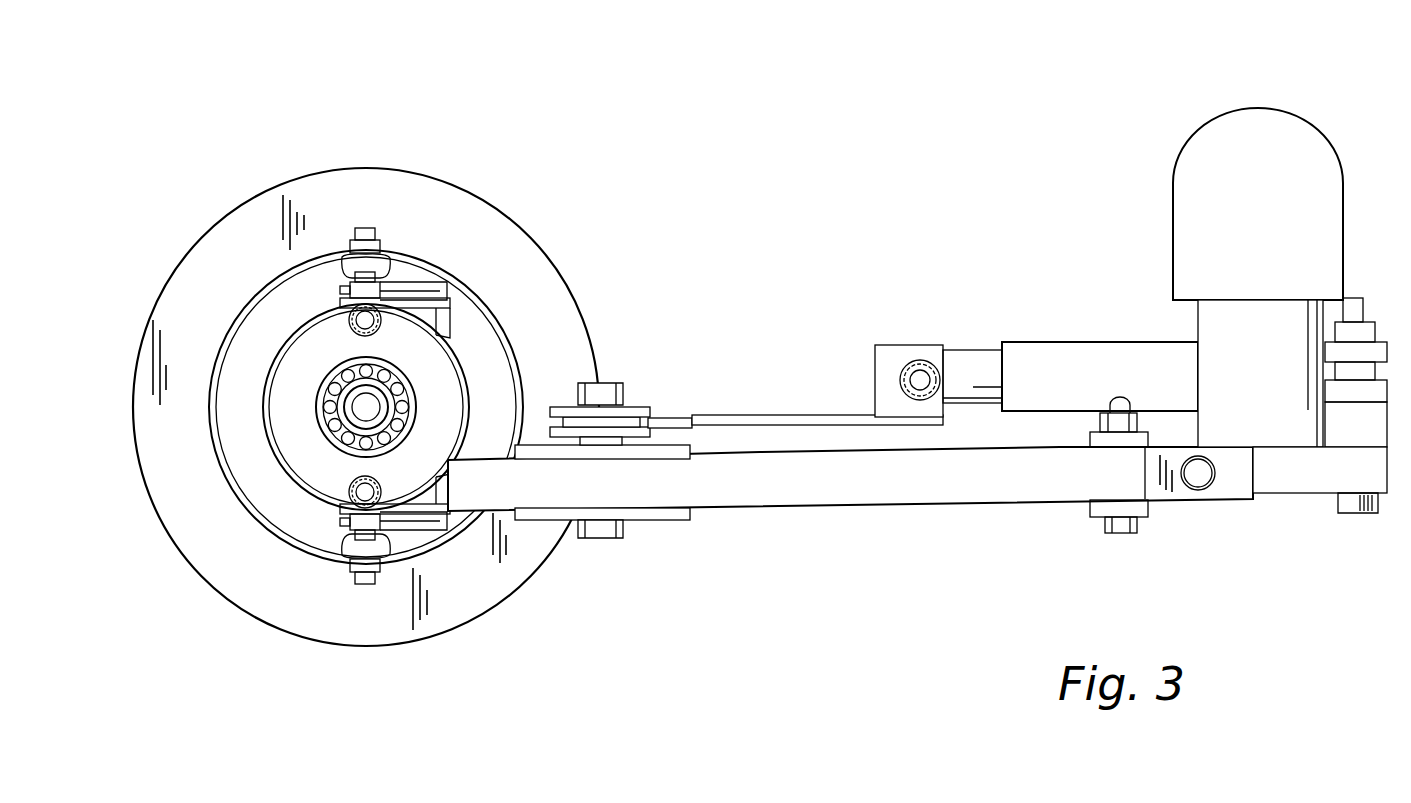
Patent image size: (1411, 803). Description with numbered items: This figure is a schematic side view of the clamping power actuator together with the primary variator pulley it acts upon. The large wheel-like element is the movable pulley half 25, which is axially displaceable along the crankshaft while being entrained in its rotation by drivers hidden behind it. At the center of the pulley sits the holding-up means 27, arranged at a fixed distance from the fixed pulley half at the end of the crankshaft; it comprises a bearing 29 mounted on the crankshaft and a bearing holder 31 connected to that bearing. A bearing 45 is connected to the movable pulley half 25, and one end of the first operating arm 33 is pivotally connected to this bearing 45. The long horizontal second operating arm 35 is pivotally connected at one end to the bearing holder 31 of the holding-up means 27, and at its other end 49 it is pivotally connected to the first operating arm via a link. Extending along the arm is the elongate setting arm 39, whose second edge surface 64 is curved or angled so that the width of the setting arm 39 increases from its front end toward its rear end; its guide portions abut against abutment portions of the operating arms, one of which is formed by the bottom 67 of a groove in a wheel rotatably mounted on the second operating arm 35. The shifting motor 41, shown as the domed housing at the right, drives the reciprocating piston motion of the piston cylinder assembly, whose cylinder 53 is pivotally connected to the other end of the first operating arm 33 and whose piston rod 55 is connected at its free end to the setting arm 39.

The movable pulley half 25 is at (475, 215).
The holding-up means 27 is at (288, 398).
The bearing 29 is at (315, 420).
The bearing holder 31 is at (312, 470).
The first operating arm 33 is at (1232, 482).
The second operating arm 35 is at (862, 486).
The setting arm 39 is at (797, 418).
The shifting motor 41 is at (1218, 163).
The bearing 45 is at (487, 345).
The other end of the second operating arm 49 is at (1145, 487).
The cylinder 53 is at (1072, 370).
The piston rod 55 is at (971, 373).
The second edge surface 64 is at (680, 416).
The bottom of the groove 67 is at (662, 416).